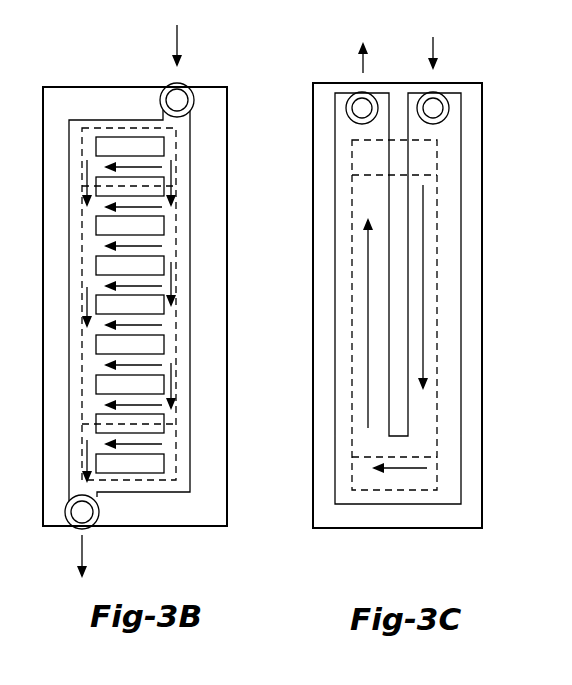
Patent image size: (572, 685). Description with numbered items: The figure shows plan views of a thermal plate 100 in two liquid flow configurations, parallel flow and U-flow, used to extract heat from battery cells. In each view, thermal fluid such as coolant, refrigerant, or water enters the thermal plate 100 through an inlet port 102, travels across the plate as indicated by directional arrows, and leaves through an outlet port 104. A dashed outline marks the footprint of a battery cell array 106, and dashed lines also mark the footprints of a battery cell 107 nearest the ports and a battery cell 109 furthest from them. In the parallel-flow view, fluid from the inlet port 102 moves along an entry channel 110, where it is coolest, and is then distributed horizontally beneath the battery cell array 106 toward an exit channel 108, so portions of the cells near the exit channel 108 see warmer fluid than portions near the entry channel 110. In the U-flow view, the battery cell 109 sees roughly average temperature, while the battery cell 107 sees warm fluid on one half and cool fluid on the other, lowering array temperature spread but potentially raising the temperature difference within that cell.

In FIG. 3B, the thermal plate 100 is at (75, 65).
In FIG. 3C, the thermal plate 100 is at (328, 60).
In FIG. 3B, the inlet port 102 is at (188, 100).
In FIG. 3C, the inlet port 102 is at (448, 110).
In FIG. 3B, the outlet port 104 is at (98, 513).
In FIG. 3C, the outlet port 104 is at (347, 110).
In FIG. 3B, the battery cell array 106 is at (176, 240).
In FIG. 3C, the battery cell array 106 is at (437, 250).
In FIG. 3B, the battery cell 107 is at (176, 143).
In FIG. 3C, the battery cell 107 is at (437, 155).
In FIG. 3B, the exit channel 108 is at (72, 261).
In FIG. 3B, the battery cell 109 is at (175, 455).
In FIG. 3C, the battery cell 109 is at (437, 472).
In FIG. 3B, the entry channel 110 is at (190, 298).